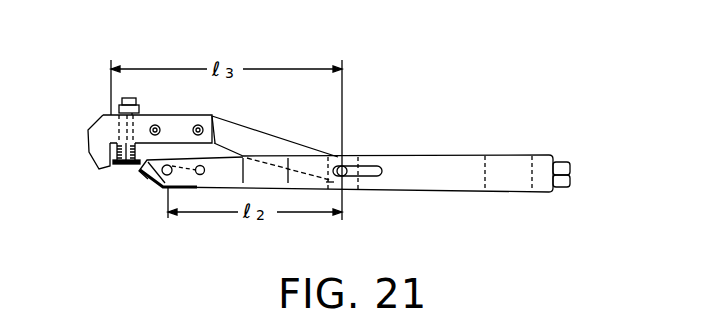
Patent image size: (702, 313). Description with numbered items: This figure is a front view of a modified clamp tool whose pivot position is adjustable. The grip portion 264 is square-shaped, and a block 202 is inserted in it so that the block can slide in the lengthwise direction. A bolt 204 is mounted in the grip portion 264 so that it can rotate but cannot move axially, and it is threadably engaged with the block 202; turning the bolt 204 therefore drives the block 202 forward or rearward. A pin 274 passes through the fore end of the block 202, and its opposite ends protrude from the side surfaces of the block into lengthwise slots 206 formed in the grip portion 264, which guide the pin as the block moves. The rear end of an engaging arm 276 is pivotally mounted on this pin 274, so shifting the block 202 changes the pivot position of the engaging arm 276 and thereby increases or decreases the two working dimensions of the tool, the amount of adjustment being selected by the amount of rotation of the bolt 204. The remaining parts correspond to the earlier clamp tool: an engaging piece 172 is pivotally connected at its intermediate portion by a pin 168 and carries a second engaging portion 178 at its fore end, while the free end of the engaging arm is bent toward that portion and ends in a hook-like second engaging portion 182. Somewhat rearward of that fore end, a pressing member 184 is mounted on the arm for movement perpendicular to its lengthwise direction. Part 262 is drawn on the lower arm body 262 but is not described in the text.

The pin 168 is at (153, 188).
The engaging piece 172 is at (192, 188).
The second engaging portion 178 is at (142, 173).
The hook-like second engaging portion 182 is at (100, 168).
The pressing member 184 is at (110, 130).
The block 202 is at (487, 177).
The bolt 204 is at (570, 163).
The lengthwise slots 206 is at (382, 170).
The lower arm body 262 is at (277, 178).
The grip portion 264 is at (445, 180).
The pin 274 is at (345, 170).
The engaging arm 276 is at (270, 143).